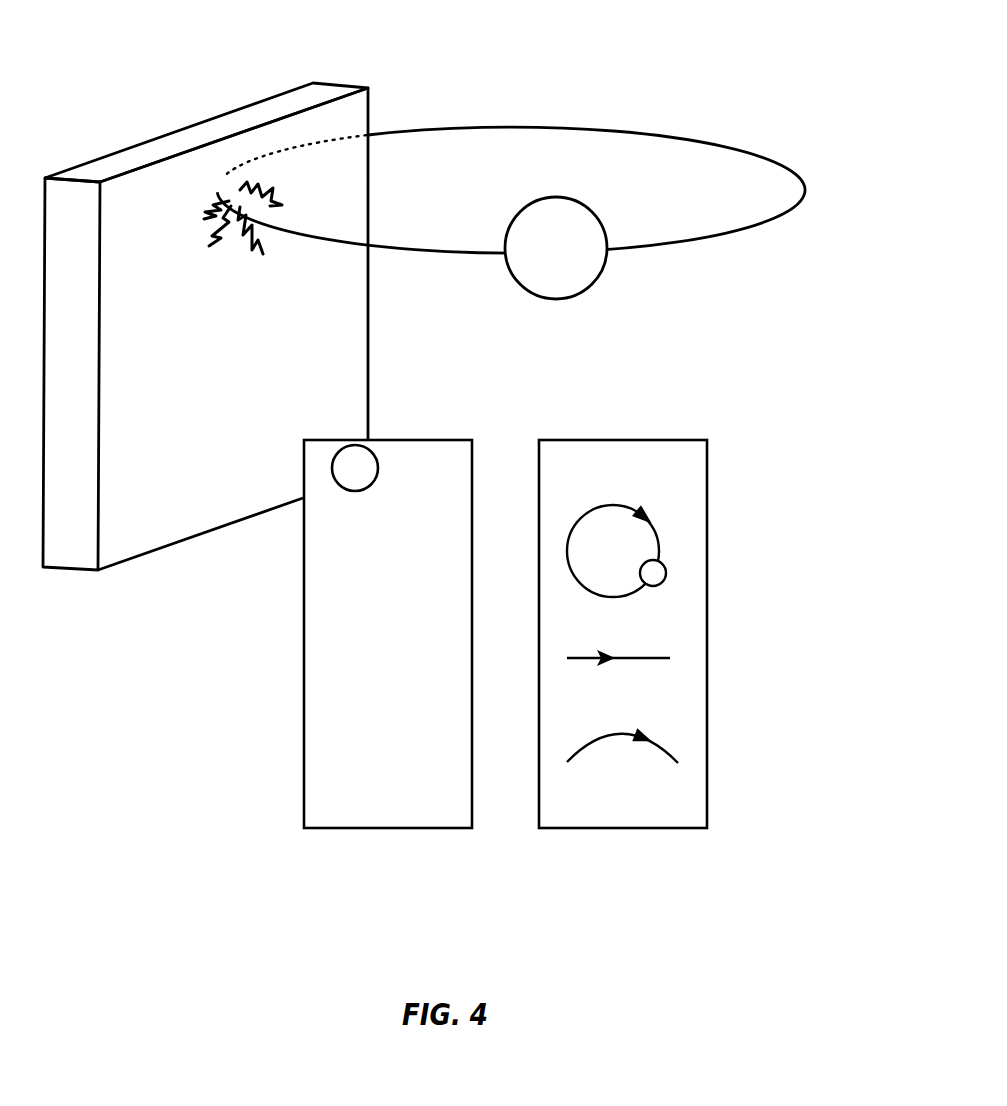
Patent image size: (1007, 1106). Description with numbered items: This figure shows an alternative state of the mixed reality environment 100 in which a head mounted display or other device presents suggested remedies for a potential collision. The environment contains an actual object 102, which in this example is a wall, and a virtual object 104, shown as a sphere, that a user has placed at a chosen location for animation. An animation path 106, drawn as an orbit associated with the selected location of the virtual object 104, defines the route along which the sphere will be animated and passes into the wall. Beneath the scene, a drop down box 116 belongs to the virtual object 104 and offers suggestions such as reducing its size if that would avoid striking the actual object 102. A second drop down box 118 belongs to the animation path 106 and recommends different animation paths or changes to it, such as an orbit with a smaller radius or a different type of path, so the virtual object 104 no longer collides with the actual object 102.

The mixed reality environment 100 is at (652, 65).
The actual object 102 is at (183, 538).
The virtual object 104 is at (587, 200).
The animation path 106 is at (728, 143).
The drop down box 116 is at (413, 828).
The drop down box 118 is at (633, 828).